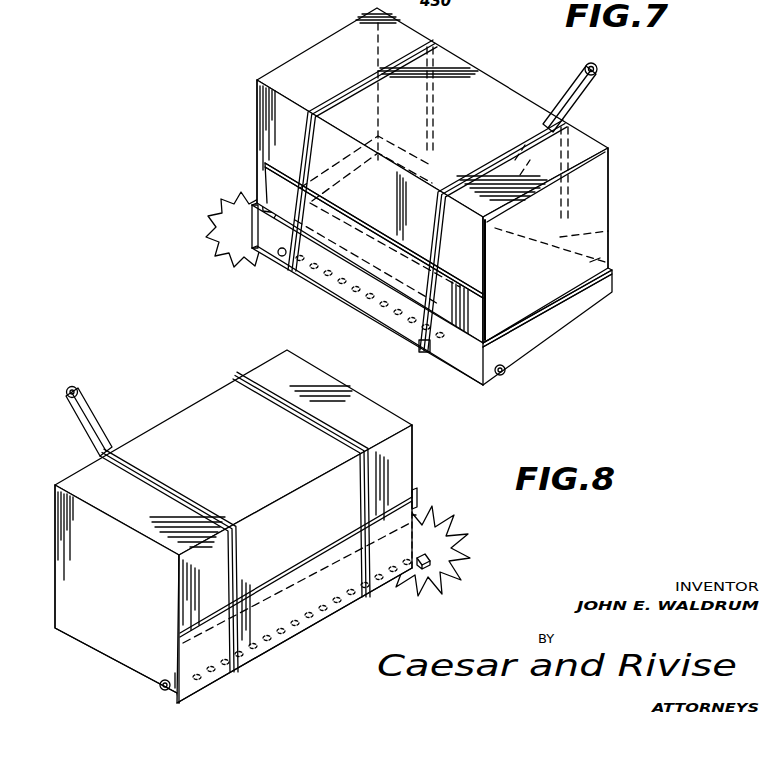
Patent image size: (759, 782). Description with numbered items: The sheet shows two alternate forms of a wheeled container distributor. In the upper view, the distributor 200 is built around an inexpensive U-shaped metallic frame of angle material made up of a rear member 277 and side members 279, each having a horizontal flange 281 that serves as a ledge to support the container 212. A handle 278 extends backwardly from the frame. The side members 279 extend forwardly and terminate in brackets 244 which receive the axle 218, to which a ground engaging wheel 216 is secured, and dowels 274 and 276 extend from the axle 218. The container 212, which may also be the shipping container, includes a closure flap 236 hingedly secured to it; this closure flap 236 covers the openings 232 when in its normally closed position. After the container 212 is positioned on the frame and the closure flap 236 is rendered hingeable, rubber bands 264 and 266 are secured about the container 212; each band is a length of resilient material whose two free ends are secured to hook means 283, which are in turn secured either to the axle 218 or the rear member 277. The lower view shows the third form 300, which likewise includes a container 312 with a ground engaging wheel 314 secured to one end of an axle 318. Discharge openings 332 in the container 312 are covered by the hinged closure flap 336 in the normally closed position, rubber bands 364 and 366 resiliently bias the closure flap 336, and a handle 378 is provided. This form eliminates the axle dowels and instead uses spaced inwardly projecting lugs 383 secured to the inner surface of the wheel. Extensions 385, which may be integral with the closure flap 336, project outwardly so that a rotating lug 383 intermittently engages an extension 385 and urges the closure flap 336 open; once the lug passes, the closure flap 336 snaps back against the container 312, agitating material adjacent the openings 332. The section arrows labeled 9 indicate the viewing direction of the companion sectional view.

In FIG. 7, the distributor 200 is at (634, 188).
In FIG. 7, the container 212 is at (493, 78).
In FIG. 7, the ground engaging wheel 216 is at (214, 233).
In FIG. 7, the axle 218 is at (501, 376).
In FIG. 7, the openings 232 is at (335, 258).
In FIG. 7, the closure flap 236 is at (368, 312).
In FIG. 7, the brackets 244 is at (517, 347).
In FIG. 7, the rubber band 264 is at (334, 97).
In FIG. 7, the rubber band 266 is at (498, 158).
In FIG. 7, the dowel 274 is at (283, 258).
In FIG. 7, the dowel 276 is at (436, 355).
In FIG. 7, the rear member 277 is at (593, 262).
In FIG. 7, the handle 278 is at (585, 83).
In FIG. 7, the side members 279 is at (347, 153).
In FIG. 7, the horizontal flange 281 is at (546, 224).
In FIG. 7, the hook means 283 is at (450, 148).
In FIG. 7, the section line 9 is at (257, 357).
In FIG. 8, the section line 9 is at (440, 448).
In FIG. 8, the third alternate form 300 is at (153, 392).
In FIG. 8, the container 312 is at (88, 648).
In FIG. 8, the ground engaging wheel 314 is at (448, 541).
In FIG. 8, the axle 318 is at (160, 688).
In FIG. 8, the discharge openings 332 is at (340, 605).
In FIG. 8, the closure flap 336 is at (284, 578).
In FIG. 8, the rubber band 364 is at (162, 484).
In FIG. 8, the rubber band 366 is at (290, 408).
In FIG. 8, the handle 378 is at (87, 388).
In FIG. 8, the lugs 383 is at (428, 566).
In FIG. 8, the extensions 385 is at (427, 525).